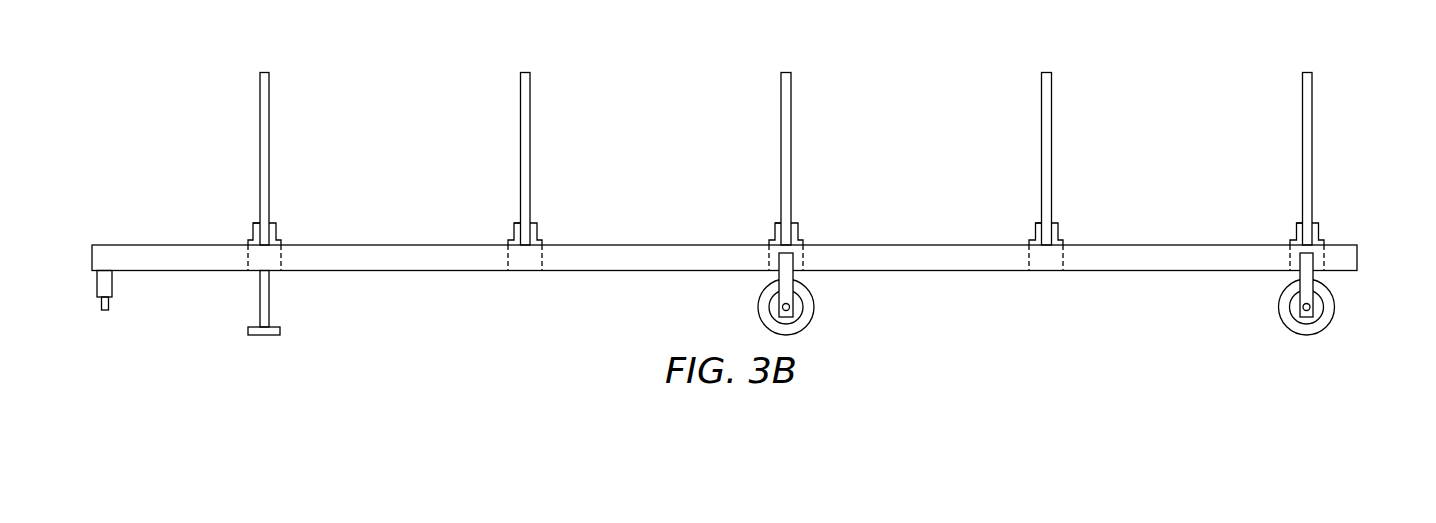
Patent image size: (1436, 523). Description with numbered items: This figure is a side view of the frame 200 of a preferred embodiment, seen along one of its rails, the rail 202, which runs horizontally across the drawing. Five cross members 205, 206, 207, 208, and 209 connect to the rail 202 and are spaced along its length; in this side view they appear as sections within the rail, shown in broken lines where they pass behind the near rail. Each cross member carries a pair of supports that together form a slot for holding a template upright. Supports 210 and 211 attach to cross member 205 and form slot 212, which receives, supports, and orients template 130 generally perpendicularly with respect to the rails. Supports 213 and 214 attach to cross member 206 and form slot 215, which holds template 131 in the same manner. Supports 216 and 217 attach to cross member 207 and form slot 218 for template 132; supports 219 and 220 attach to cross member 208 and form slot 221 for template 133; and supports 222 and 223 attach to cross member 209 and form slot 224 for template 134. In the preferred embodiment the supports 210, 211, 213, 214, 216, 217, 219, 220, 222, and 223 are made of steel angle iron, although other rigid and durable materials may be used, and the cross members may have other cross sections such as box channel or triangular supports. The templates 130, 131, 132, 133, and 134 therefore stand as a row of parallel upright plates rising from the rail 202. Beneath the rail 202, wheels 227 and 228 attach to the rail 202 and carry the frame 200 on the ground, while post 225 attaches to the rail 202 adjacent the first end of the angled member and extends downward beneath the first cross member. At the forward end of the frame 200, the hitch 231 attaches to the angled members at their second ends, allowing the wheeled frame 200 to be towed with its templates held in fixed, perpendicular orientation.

The frame 200 is at (414, 49).
The rail 202 is at (622, 271).
The template 130 is at (260, 108).
The template 131 is at (520, 112).
The template 132 is at (781, 108).
The template 133 is at (1052, 102).
The template 134 is at (1312, 108).
The cross member 205 is at (248, 258).
The cross member 206 is at (508, 258).
The cross member 207 is at (769, 258).
The cross member 208 is at (1063, 258).
The cross member 209 is at (1324, 258).
The support 210 is at (248, 240).
The support 211 is at (279, 238).
The slot 212 is at (254, 222).
The support 213 is at (508, 240).
The support 214 is at (540, 238).
The slot 215 is at (515, 222).
The support 216 is at (769, 240).
The support 217 is at (801, 238).
The slot 218 is at (776, 222).
The support 219 is at (1029, 240).
The support 220 is at (1061, 238).
The slot 221 is at (1036, 222).
The support 222 is at (1290, 240).
The support 223 is at (1322, 238).
The slot 224 is at (1297, 222).
The post 225 is at (260, 318).
The wheel 227 is at (812, 312).
The wheel 228 is at (1332, 318).
The hitch 231 is at (97, 285).